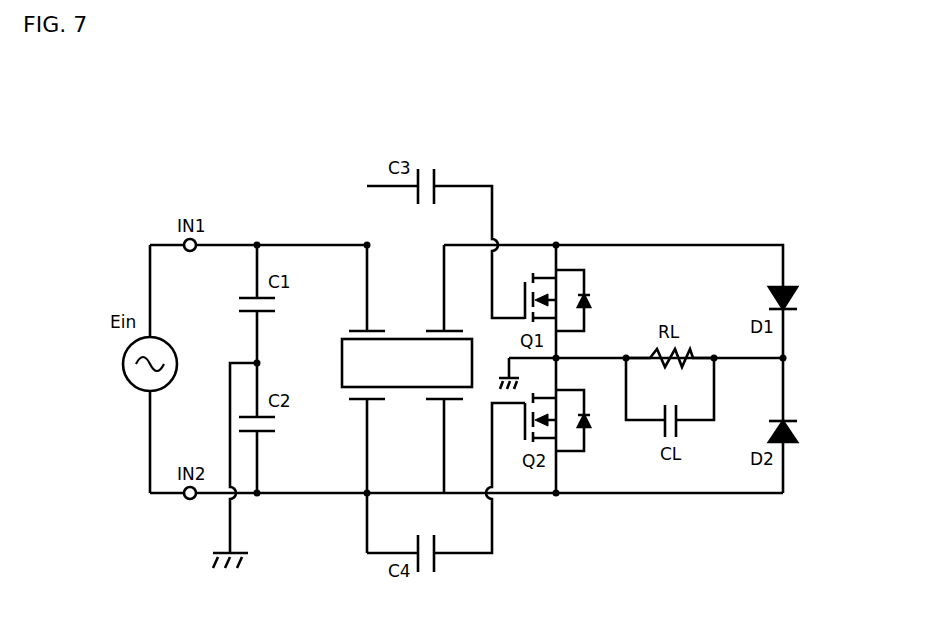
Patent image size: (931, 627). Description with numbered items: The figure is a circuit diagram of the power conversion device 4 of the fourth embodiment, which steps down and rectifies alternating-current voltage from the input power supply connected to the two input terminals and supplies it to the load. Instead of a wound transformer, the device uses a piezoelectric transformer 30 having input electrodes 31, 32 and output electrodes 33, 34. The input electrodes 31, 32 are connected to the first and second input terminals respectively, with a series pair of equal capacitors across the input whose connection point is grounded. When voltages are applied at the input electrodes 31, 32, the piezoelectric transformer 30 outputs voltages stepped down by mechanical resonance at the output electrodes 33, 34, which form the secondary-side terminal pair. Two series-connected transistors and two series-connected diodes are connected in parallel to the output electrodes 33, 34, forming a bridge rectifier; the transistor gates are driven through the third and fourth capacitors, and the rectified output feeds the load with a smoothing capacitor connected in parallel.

The power conversion device 4 is at (224, 139).
The piezoelectric transformer 30 is at (334, 350).
The input electrode 31 is at (360, 330).
The input electrode 32 is at (360, 400).
The output electrode 33 is at (437, 330).
The output electrode 34 is at (437, 400).